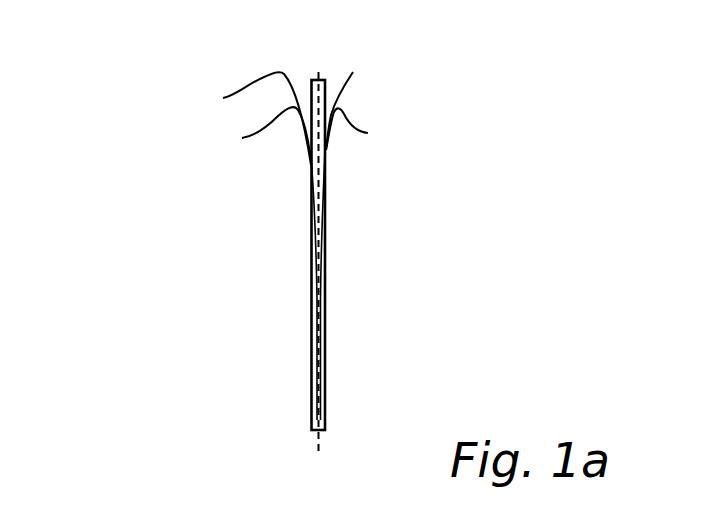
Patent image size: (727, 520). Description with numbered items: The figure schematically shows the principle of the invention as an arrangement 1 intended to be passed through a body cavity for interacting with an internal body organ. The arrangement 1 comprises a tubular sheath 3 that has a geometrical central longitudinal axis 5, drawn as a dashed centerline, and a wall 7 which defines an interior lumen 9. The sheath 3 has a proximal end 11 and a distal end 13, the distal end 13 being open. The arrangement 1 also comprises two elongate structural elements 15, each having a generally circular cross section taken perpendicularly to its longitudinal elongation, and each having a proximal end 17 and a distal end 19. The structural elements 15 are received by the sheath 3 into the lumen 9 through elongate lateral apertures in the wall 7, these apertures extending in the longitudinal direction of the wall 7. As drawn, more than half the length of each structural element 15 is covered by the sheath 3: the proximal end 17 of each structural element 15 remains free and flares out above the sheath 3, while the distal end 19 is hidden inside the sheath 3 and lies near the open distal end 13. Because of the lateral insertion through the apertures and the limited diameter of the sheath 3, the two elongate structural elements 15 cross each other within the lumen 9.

The arrangement 1 is at (112, 111).
The tubular sheath 3 is at (310, 268).
The geometrical central longitudinal axis 5 is at (319, 73).
The wall 7 is at (326, 255).
The interior lumen 9 is at (325, 417).
The proximal end 11 is at (328, 79).
The distal end 13 is at (313, 438).
The elongate structural elements 15 is at (307, 138).
The proximal end 17 is at (247, 118).
The distal end 19 is at (325, 410).